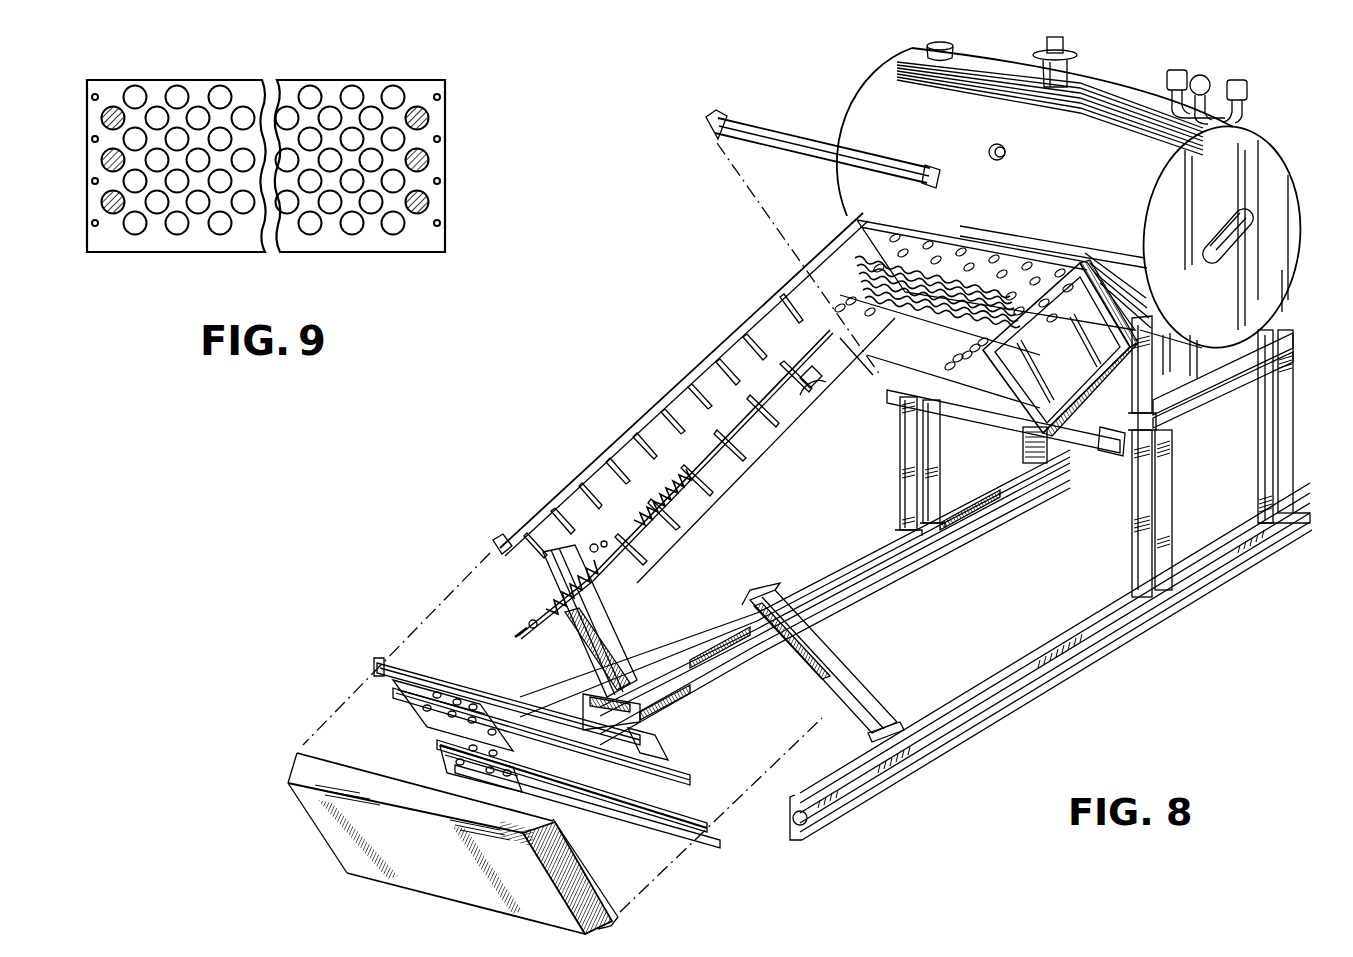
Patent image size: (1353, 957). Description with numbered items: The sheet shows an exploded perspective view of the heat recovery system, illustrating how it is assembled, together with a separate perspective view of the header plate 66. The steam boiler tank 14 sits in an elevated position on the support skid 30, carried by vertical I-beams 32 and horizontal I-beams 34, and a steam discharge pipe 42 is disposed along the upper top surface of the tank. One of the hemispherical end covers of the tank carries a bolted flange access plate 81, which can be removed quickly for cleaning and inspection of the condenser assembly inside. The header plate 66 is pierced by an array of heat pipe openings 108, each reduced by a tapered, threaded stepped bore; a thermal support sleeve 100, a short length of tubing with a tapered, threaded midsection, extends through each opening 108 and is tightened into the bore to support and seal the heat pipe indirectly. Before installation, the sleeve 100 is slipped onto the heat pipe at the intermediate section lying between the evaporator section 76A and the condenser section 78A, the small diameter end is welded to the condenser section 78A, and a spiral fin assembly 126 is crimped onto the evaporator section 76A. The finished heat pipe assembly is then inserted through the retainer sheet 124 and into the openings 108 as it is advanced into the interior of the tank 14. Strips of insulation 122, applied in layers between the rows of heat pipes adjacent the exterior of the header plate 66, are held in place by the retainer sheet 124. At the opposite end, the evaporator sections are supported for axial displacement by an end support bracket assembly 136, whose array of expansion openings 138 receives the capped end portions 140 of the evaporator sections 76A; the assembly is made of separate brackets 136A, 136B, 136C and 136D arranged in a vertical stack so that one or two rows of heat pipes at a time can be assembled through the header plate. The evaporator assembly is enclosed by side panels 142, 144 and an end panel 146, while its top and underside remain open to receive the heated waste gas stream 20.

In FIG. 8, the steam boiler tank 14 is at (867, 77).
In FIG. 8, the heated waste gas stream 20 is at (1115, 475).
In FIG. 8, the support skid 30 is at (1090, 642).
In FIG. 8, the vertical I-beams 32 is at (1297, 462).
In FIG. 8, the horizontal I-beams 34 is at (1237, 372).
In FIG. 8, the steam discharge pipe 42 is at (1068, 70).
In FIG. 9, the header plate 66 is at (456, 127).
In FIG. 8, the header plate 66 is at (1011, 250).
In FIG. 8, the evaporator section 76A is at (589, 549).
In FIG. 8, the condenser section 78A is at (810, 384).
In FIG. 8, the bolted flange access plate 81 is at (1225, 250).
In FIG. 8, the thermal support sleeve 100 is at (700, 472).
In FIG. 9, the heat pipe opening 108 is at (156, 106).
In FIG. 8, the heat pipe opening 108 is at (978, 268).
In FIG. 8, the strips of insulation 122 is at (945, 312).
In FIG. 8, the retainer sheet 124 is at (933, 352).
In FIG. 8, the spiral fin assembly 126 is at (643, 493).
In FIG. 8, the end support bracket assembly 136 is at (403, 718).
In FIG. 8, the bracket 136A is at (518, 703).
In FIG. 8, the bracket 136B is at (680, 765).
In FIG. 8, the bracket 136C is at (697, 780).
In FIG. 8, the bracket 136D is at (713, 822).
In FIG. 8, the expansion openings 138 is at (440, 684).
In FIG. 8, the capped end portions 140 is at (530, 622).
In FIG. 8, the side panel 142 is at (693, 372).
In FIG. 8, the side panel 144 is at (1064, 362).
In FIG. 8, the end panel 146 is at (327, 825).